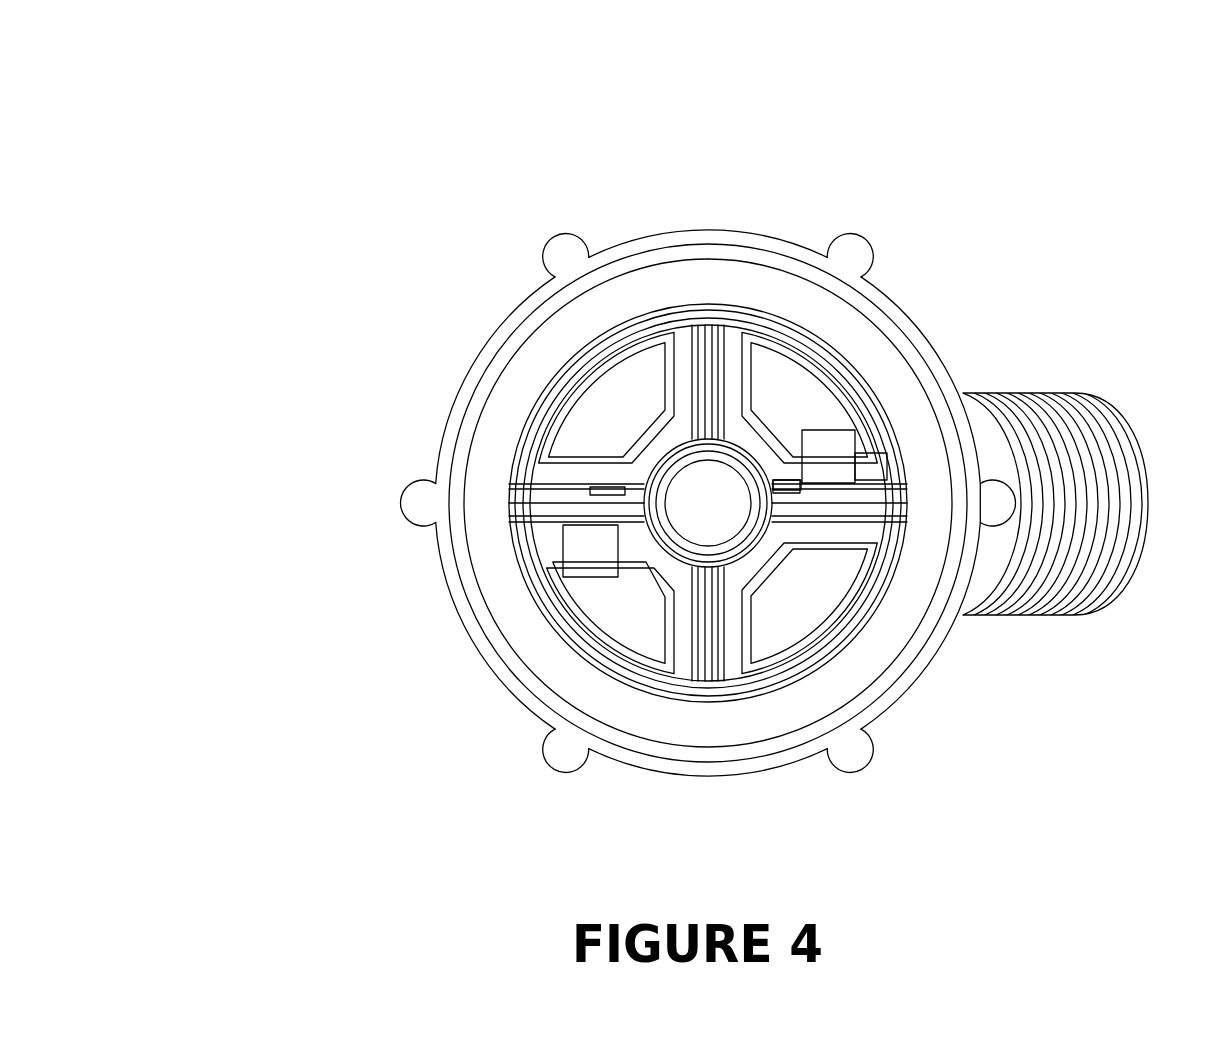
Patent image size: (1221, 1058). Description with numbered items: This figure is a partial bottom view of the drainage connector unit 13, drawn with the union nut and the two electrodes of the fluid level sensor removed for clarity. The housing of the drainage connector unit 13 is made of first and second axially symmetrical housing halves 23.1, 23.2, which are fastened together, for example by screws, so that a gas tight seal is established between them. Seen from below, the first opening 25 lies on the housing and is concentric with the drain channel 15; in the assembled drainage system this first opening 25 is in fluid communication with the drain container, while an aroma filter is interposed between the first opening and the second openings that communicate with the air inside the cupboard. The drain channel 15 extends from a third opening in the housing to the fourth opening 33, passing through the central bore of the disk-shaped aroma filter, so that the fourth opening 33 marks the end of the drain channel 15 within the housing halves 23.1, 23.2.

The drainage connector unit 13 is at (310, 195).
The drain channel 15 is at (745, 510).
The first housing half 23.1 is at (724, 350).
The second housing half 23.2 is at (729, 593).
The first opening 25 is at (826, 387).
The fourth opening 33 is at (765, 478).